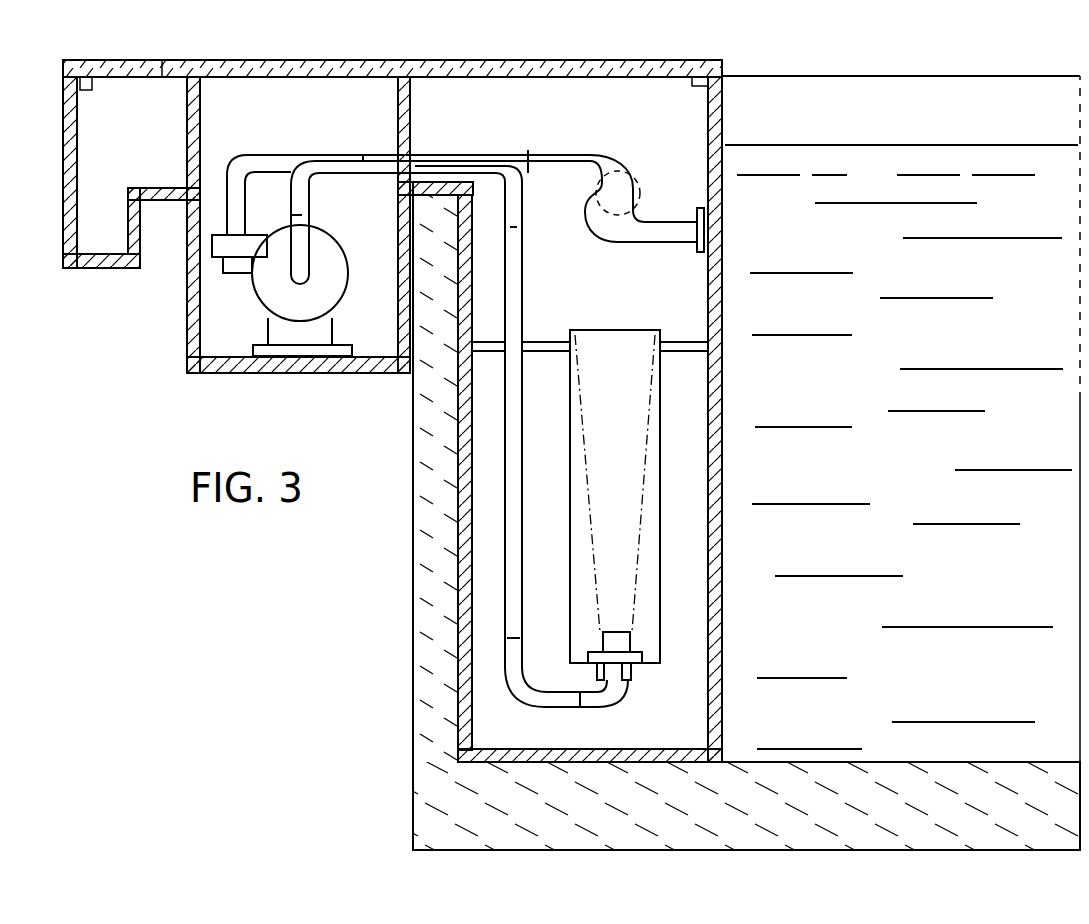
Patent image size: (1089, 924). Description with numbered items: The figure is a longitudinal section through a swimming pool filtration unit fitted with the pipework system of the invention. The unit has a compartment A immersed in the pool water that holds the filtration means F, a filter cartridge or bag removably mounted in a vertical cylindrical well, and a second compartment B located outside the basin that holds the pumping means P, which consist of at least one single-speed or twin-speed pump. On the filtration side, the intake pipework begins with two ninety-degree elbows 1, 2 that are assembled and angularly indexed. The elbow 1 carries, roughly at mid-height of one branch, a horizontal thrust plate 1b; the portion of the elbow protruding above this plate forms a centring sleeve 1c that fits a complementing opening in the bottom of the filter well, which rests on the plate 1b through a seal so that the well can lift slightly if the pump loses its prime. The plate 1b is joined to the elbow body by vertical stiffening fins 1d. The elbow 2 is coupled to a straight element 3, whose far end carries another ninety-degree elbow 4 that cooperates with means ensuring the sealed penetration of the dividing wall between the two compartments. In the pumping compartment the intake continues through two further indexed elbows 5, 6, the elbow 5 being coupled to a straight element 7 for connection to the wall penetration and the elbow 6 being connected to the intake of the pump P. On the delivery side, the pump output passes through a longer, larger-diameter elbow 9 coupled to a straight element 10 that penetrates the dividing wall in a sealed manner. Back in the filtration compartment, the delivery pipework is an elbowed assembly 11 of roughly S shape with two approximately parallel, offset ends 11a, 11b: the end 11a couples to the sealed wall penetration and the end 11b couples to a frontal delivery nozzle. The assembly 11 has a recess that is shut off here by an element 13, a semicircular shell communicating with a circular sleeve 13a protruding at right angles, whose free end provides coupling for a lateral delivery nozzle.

The 90° elbow 1 is at (622, 698).
The horizontal thrust plate 1b is at (643, 656).
The centring sleeve 1c is at (618, 638).
The vertical stiffening fins 1d is at (635, 677).
The 90° elbow 2 is at (530, 700).
The straight element 3 is at (519, 296).
The 90° elbow 4 is at (515, 187).
The 90° elbow 5 is at (318, 157).
The 90° elbow 6 is at (293, 265).
The straight element 7 is at (433, 160).
The 90° elbow 9 is at (245, 163).
The straight element 10 is at (523, 153).
The elbowed assembly 11 is at (663, 245).
The end of elbowed assembly 11a is at (579, 152).
The end of elbowed assembly 11b is at (704, 232).
The shutting-off element 13 is at (593, 222).
The circular sleeve 13a is at (636, 180).
The compartment A is at (682, 578).
The compartment B is at (373, 328).
The filtration means F is at (662, 422).
The pumping means P is at (292, 300).